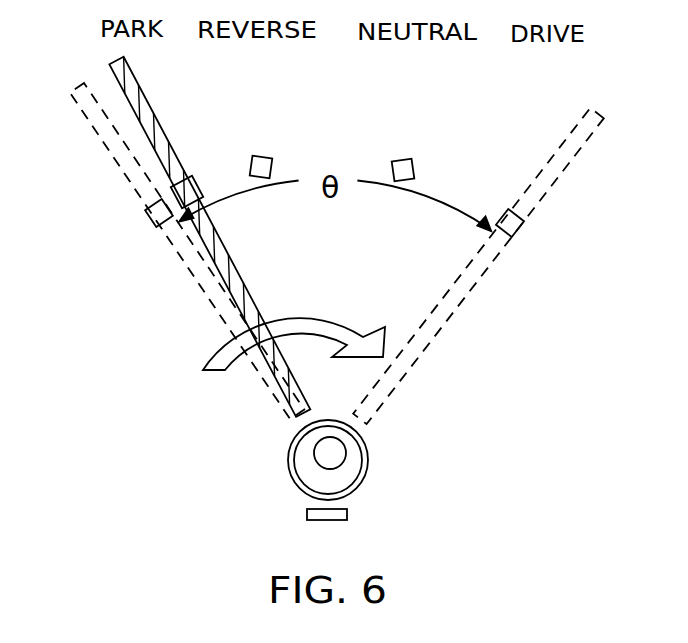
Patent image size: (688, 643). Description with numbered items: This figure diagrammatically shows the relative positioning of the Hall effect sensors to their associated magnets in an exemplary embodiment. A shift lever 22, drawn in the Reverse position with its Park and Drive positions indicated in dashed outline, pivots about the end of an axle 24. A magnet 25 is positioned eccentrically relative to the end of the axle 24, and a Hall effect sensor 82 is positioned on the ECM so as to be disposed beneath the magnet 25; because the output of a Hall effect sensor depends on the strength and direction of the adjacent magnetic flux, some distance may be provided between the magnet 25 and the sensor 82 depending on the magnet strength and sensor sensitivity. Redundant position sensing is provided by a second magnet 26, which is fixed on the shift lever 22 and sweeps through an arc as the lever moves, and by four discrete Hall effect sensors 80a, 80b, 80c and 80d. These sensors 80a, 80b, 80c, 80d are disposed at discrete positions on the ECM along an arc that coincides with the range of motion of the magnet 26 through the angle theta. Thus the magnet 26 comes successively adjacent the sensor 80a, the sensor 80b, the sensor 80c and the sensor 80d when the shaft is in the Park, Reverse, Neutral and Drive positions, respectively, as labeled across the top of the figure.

The shift lever 22 is at (241, 278).
The axle 24 is at (367, 443).
The magnet 25 is at (314, 455).
The magnet 26 is at (192, 177).
The Hall effect sensor 80a is at (150, 203).
The Hall effect sensor 80b is at (262, 157).
The Hall effect sensor 80c is at (404, 160).
The Hall effect sensor 80d is at (506, 211).
The Hall effect sensor 82 is at (307, 515).